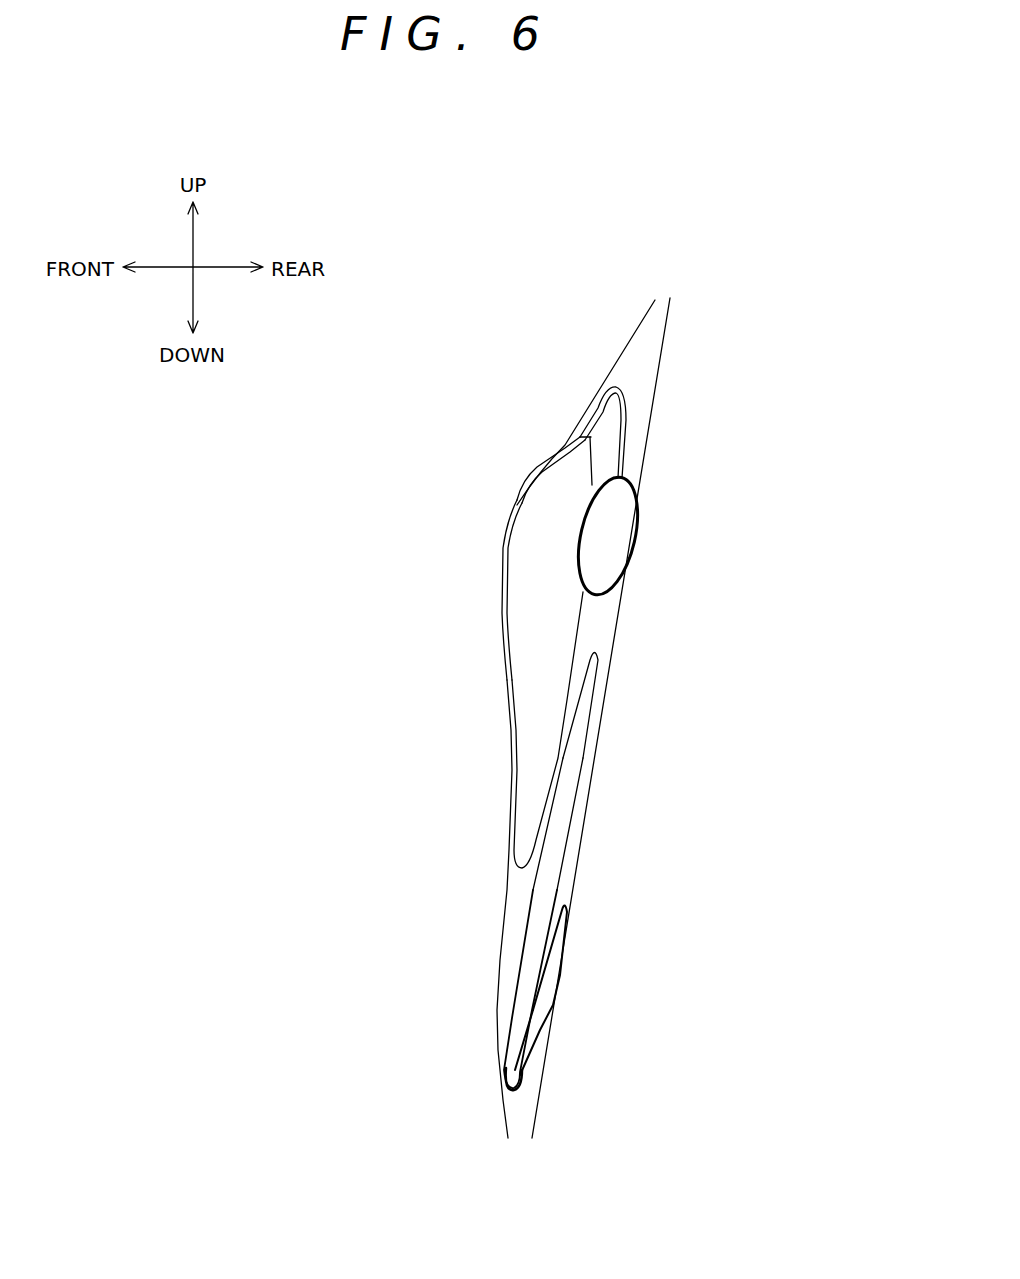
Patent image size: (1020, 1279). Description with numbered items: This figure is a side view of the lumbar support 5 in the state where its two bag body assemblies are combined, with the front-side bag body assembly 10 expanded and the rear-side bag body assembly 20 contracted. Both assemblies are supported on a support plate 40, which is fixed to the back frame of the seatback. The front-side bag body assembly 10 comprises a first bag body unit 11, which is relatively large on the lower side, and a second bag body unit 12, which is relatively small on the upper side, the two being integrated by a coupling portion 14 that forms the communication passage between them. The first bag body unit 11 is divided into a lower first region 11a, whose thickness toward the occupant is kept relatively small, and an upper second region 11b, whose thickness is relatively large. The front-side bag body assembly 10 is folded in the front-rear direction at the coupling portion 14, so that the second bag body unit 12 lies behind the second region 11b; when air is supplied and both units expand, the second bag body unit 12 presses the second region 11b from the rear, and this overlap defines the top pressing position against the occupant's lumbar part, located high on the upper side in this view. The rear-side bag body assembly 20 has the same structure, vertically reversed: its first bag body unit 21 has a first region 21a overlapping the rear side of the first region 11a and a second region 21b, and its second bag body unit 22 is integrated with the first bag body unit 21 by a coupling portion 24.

The lumbar support 5 is at (652, 673).
The support plate 40 is at (653, 423).
The front-side bag body assembly 10 is at (560, 738).
The first bag body unit 11 is at (576, 738).
The first region 11a is at (535, 713).
The second region 11b is at (503, 540).
The second bag body unit 12 is at (627, 577).
The coupling portion 14 is at (632, 406).
The rear-side bag body assembly 20 is at (552, 897).
The first bag body unit 21 is at (569, 871).
The first region 21a is at (592, 709).
The second region 21b is at (522, 930).
The second bag body unit 22 is at (553, 948).
The coupling portion 24 is at (520, 1063).